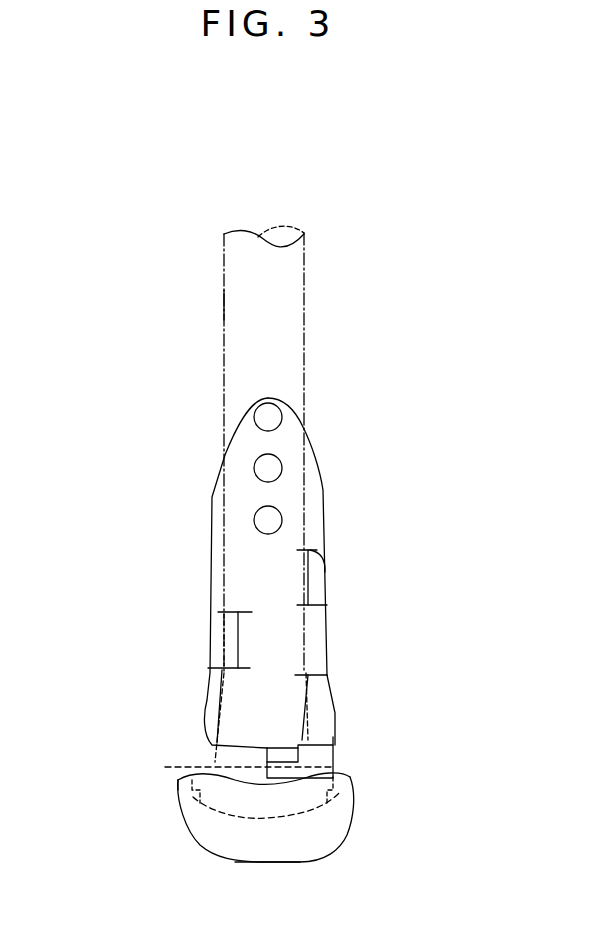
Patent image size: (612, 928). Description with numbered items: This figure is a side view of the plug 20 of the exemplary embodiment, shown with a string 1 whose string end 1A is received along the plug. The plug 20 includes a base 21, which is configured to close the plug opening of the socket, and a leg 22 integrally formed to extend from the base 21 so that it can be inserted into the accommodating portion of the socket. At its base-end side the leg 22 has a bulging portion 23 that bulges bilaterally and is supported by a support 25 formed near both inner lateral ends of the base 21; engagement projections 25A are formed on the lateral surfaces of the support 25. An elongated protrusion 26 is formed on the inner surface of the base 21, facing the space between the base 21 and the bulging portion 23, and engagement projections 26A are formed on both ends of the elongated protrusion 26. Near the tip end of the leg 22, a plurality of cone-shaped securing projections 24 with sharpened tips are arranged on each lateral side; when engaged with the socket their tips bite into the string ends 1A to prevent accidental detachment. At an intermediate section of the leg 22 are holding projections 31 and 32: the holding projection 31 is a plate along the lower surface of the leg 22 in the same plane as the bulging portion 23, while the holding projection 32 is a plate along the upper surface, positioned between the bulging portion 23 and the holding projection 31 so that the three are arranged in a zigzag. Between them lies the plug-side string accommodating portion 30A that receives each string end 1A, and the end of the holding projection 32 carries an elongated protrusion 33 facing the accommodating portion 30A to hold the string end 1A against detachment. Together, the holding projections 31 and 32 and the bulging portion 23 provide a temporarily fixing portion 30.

The string 1 is at (236, 436).
The string ends 1A is at (224, 303).
The plug 20 is at (260, 826).
The base 21 is at (255, 864).
The leg 22 is at (259, 573).
The bulging portion 23 is at (322, 687).
The securing projections 24 is at (254, 520).
The support 25 is at (344, 735).
The engagement projections 25A is at (283, 753).
The elongated protrusion 26 is at (200, 768).
The engagement projections 26A is at (178, 781).
The temporarily fixing portion 30 is at (235, 588).
The plug-side string accommodating portion 30A is at (272, 639).
The holding projection 31 is at (317, 572).
The holding projection 32 is at (217, 637).
The elongated protrusion 33 is at (232, 610).